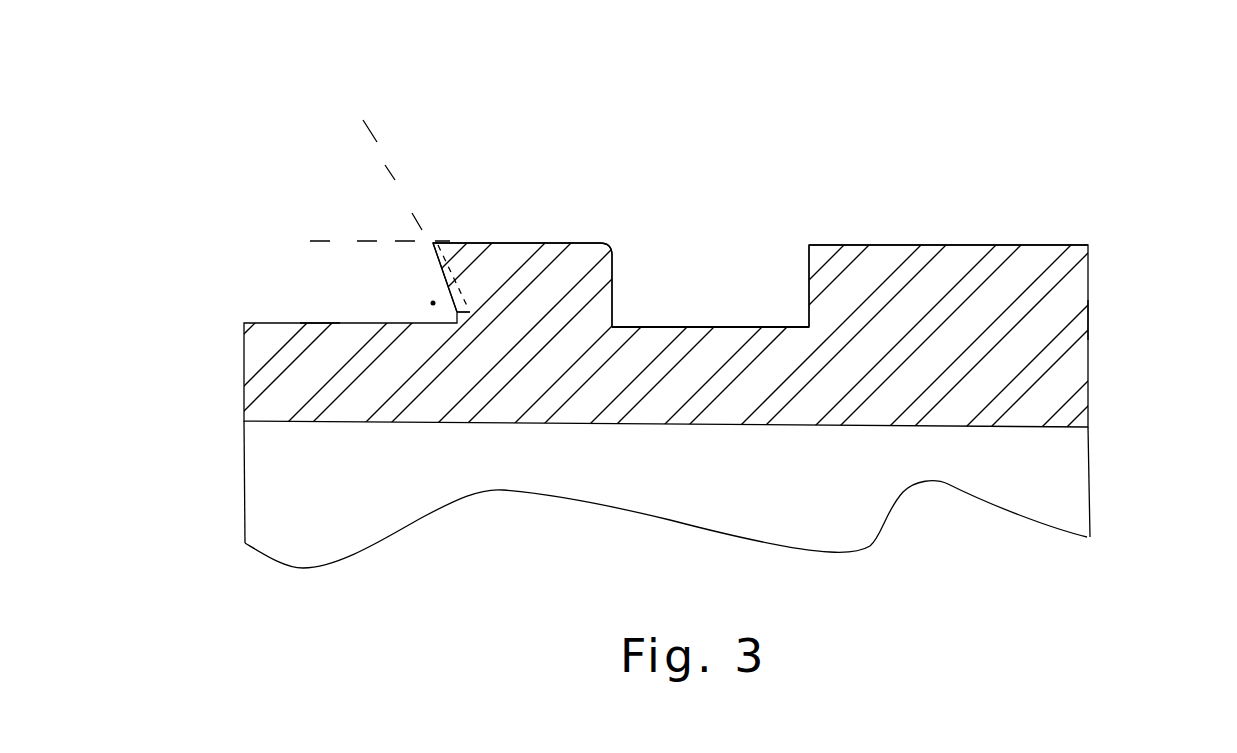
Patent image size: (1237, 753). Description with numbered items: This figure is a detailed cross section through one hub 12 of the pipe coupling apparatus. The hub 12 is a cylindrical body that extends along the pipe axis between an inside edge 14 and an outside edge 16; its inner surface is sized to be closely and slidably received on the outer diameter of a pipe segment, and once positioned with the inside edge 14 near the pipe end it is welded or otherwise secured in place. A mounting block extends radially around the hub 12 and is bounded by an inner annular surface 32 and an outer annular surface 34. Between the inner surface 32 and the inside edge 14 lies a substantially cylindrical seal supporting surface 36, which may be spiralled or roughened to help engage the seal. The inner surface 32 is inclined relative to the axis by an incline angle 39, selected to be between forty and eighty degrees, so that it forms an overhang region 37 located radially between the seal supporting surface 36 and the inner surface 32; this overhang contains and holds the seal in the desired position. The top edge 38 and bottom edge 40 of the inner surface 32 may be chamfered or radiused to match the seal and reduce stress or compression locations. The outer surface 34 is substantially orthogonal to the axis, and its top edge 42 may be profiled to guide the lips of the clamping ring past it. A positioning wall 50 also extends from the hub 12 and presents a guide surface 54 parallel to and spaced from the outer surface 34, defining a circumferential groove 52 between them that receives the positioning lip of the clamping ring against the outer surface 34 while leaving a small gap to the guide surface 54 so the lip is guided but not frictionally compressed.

The hub 12 is at (746, 108).
The inside edge 14 is at (243, 370).
The outside edge 16 is at (1090, 313).
The inner annular surface 32 is at (457, 312).
The outer annular surface 34 is at (615, 290).
The seal supporting surface 36 is at (318, 320).
The overhang region 37 is at (433, 303).
The top edge of the inner surface 38 is at (433, 243).
The incline angle 39 is at (367, 227).
The bottom edge of the inner surface 40 is at (505, 245).
The top edge of the outer surface 42 is at (613, 245).
The positioning wall 50 is at (952, 243).
The circumferential groove 52 is at (707, 246).
The guide surface 54 is at (807, 287).